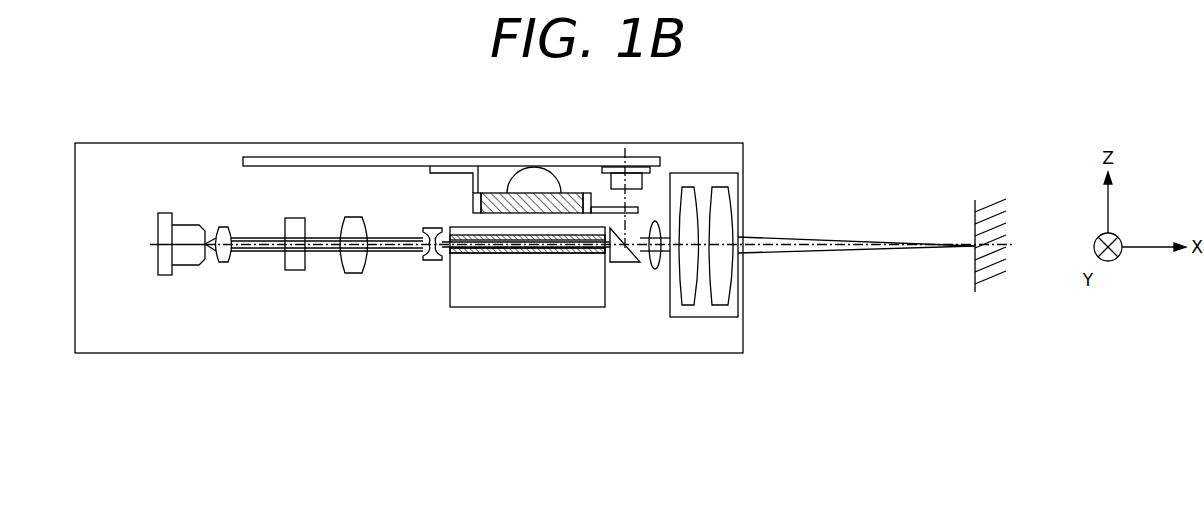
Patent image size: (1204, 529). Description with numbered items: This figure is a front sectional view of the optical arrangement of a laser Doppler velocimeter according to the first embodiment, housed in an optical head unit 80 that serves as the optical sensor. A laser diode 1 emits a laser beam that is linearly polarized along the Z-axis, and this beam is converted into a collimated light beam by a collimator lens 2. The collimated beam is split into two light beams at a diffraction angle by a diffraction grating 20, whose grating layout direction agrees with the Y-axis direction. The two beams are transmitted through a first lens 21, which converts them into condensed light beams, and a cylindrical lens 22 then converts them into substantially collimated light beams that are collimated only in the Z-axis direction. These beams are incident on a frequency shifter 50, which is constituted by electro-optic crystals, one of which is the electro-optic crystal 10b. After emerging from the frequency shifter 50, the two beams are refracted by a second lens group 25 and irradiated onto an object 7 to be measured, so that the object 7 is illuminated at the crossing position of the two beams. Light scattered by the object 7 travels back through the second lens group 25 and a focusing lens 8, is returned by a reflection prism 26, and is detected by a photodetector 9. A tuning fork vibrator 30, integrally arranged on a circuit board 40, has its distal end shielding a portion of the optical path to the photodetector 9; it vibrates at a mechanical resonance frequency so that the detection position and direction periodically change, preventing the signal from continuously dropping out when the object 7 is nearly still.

The optical head unit 80 is at (107, 152).
The laser diode 1 is at (185, 224).
The collimator lens 2 is at (230, 228).
The circuit board 40 is at (252, 157).
The diffraction grating 20 is at (296, 218).
The first lens 21 is at (357, 273).
The cylindrical lens 22 is at (438, 228).
The tuning fork vibrator 30 is at (560, 192).
The photodetector 9 is at (620, 172).
The frequency shifter 50 is at (557, 290).
The electro-optic crystal 10b is at (476, 253).
The reflection prism 26 is at (623, 262).
The focusing lens 8 is at (655, 270).
The second lens group 25 is at (718, 173).
The object to be measured 7 is at (1000, 218).